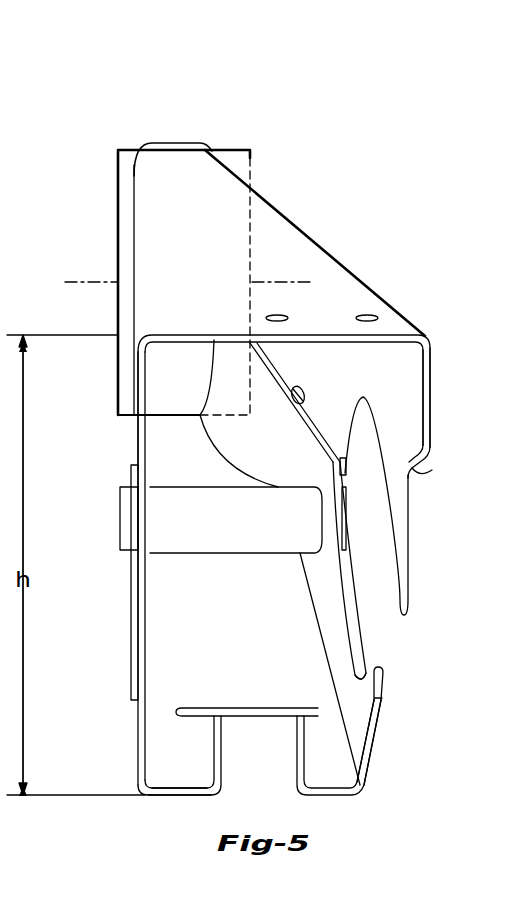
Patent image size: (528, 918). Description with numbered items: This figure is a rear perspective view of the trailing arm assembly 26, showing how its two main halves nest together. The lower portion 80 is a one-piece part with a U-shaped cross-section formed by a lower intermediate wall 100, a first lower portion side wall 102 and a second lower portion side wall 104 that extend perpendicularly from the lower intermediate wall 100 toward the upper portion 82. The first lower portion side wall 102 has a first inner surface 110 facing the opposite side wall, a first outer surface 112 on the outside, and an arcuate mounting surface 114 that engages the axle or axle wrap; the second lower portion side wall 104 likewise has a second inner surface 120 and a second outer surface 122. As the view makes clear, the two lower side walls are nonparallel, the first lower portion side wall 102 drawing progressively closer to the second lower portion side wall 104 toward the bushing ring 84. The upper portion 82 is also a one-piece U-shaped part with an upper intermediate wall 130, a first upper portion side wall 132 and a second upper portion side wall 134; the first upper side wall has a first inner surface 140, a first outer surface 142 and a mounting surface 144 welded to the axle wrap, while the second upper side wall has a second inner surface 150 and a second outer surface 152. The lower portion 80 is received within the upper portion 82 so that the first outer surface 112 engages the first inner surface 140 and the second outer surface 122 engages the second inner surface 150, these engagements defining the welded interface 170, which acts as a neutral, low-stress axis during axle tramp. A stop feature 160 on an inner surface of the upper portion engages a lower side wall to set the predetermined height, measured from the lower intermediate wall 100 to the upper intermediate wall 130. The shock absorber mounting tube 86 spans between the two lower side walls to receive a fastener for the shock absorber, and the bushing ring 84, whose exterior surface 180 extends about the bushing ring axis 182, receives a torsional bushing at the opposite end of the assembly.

The trailing arm assembly 26 is at (375, 198).
The lower portion 80 is at (381, 680).
The upper portion 82 is at (287, 185).
The bushing ring 84 is at (237, 150).
The shock absorber mounting tube 86 is at (240, 523).
The lower intermediate wall 100 is at (180, 790).
The first lower portion side wall 102 is at (370, 773).
The second lower portion side wall 104 is at (143, 759).
The first inner surface 110 is at (345, 665).
The first outer surface 112 is at (382, 726).
The mounting surface 114 is at (352, 653).
The second inner surface 120 is at (150, 703).
The second outer surface 122 is at (143, 722).
The upper intermediate wall 130 is at (352, 290).
The first upper portion side wall 132 is at (428, 378).
The second upper portion side wall 134 is at (131, 457).
The first inner surface 140 is at (407, 405).
The first outer surface 142 is at (422, 473).
The mounting surface 144 is at (348, 462).
The second inner surface 150 is at (148, 430).
The second outer surface 152 is at (133, 420).
The stop feature 160 is at (295, 395).
The interface 170 is at (285, 362).
The exterior surface 180 is at (125, 172).
The bushing ring axis 182 is at (82, 282).